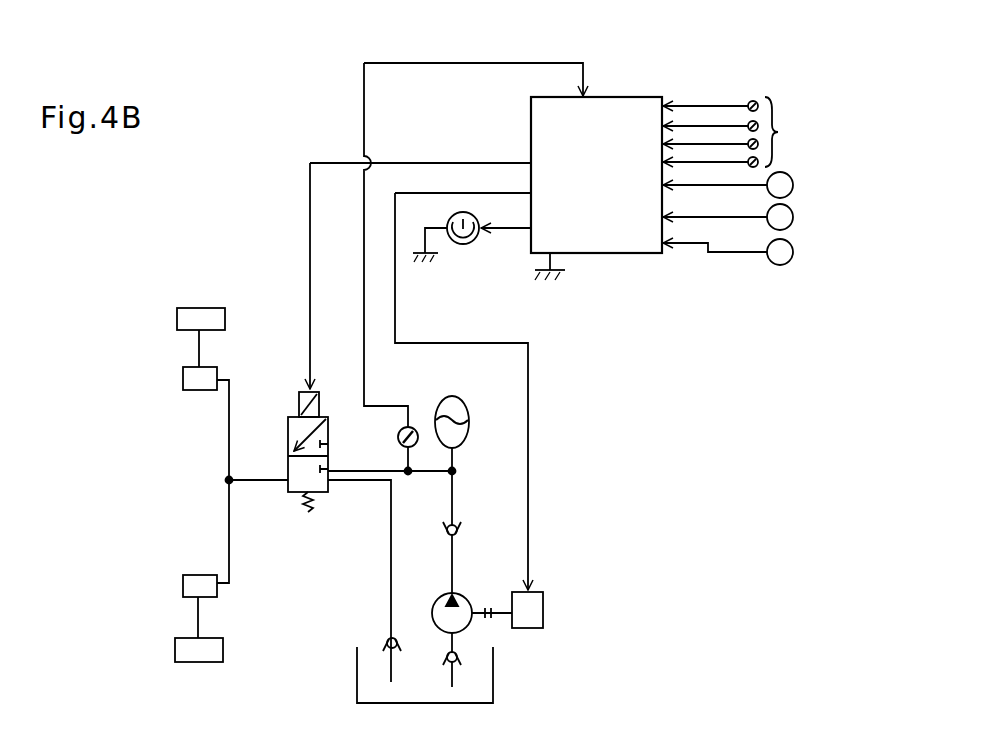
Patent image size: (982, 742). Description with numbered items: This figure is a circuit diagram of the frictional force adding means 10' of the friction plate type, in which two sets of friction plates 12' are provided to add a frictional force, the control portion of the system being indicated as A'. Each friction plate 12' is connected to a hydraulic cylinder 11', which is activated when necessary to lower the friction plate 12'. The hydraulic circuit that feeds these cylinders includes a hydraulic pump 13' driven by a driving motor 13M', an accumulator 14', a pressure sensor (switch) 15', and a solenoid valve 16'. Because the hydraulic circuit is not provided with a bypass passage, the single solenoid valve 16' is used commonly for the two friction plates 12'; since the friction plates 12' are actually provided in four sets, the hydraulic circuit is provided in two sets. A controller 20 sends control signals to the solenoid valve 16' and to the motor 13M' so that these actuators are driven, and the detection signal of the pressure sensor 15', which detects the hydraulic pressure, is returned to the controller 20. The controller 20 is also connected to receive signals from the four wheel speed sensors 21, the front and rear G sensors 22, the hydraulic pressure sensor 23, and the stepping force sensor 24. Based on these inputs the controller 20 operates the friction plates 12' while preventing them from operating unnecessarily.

The control system A' is at (408, 229).
The frictional force adding means 10' is at (238, 220).
The hydraulic cylinder 11' is at (212, 466).
The friction plate 12' is at (200, 491).
The hydraulic pump 13' is at (472, 579).
The driving motor 13M' is at (509, 410).
The accumulator 14' is at (470, 421).
The pressure sensor (switch) 15' is at (378, 450).
The solenoid valve 16' is at (388, 337).
The controller 20 is at (618, 95).
The wheel speed sensors 21 is at (735, 132).
The front and rear G sensors 22 is at (793, 186).
The hydraulic pressure sensor 23 is at (793, 218).
The stepping force sensor 24 is at (793, 252).